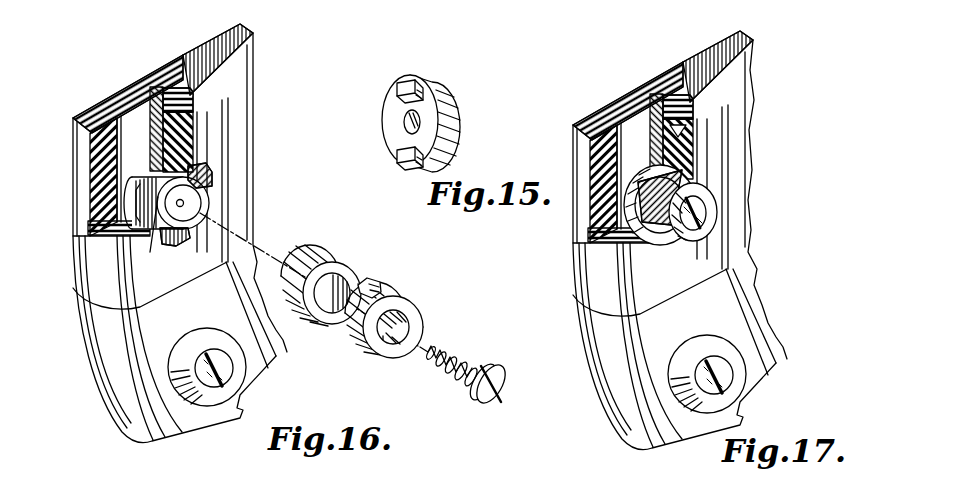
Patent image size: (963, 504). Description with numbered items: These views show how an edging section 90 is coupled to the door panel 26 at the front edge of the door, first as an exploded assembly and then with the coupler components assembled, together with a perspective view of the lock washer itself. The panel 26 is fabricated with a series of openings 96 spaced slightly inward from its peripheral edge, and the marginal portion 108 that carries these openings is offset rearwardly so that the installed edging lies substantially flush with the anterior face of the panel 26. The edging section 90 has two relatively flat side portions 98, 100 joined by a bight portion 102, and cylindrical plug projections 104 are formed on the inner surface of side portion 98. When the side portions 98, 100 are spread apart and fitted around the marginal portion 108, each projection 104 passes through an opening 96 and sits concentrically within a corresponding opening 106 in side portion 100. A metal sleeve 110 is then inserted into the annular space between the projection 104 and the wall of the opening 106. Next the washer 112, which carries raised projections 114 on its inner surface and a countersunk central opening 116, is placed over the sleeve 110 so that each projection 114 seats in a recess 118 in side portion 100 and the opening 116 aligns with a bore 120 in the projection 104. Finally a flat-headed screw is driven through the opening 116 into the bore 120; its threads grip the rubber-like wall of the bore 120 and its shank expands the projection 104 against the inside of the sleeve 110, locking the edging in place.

In FIG. 16, the panel 26 is at (237, 71).
In FIG. 17, the panel 26 is at (738, 195).
In FIG. 16, the edging section 90 is at (112, 374).
In FIG. 17, the edging section 90 is at (658, 346).
In FIG. 16, the opening 96 is at (143, 166).
In FIG. 16, the side portion 98 is at (103, 108).
In FIG. 17, the side portion 98 is at (628, 152).
In FIG. 16, the side portion 100 is at (213, 237).
In FIG. 17, the side portion 100 is at (728, 187).
In FIG. 16, the bight portion 102 is at (83, 258).
In FIG. 17, the bight portion 102 is at (575, 339).
In FIG. 16, the cylindrical plug projection 104 is at (155, 235).
In FIG. 17, the cylindrical plug projection 104 is at (714, 180).
In FIG. 16, the opening 106 is at (205, 188).
In FIG. 16, the marginal portion 108 is at (150, 78).
In FIG. 17, the marginal portion 108 is at (658, 113).
In FIG. 16, the metal sleeve 110 is at (327, 252).
In FIG. 17, the metal sleeve 110 is at (660, 223).
In FIG. 15, the washer 112 is at (447, 97).
In FIG. 16, the projection 114 is at (372, 282).
In FIG. 15, the projection 114 is at (397, 91).
In FIG. 16, the countersunk central opening 116 is at (388, 340).
In FIG. 15, the countersunk central opening 116 is at (407, 121).
In FIG. 16, the recess 118 is at (197, 167).
In FIG. 16, the bore 120 is at (184, 204).